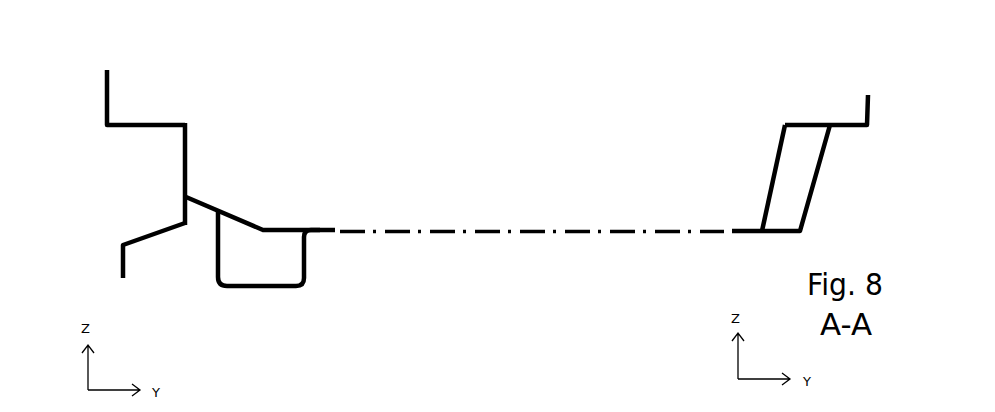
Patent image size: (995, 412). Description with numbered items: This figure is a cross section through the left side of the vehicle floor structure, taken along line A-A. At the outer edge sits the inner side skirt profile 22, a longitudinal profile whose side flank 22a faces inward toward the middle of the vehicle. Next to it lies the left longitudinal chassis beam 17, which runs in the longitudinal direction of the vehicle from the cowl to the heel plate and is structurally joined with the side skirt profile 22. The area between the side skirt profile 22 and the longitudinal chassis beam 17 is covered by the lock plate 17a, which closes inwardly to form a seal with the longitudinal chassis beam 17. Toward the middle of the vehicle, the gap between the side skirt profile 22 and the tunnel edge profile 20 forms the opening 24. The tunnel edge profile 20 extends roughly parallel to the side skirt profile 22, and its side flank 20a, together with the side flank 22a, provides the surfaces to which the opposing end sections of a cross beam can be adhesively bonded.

The inner side skirt profile 22 is at (152, 122).
The side flank 22a is at (190, 158).
The lock plate 17a is at (264, 228).
The longitudinal chassis beam 17 is at (268, 288).
The opening 24 is at (447, 232).
The tunnel edge profile 20 is at (799, 146).
The side flank 20a is at (775, 172).